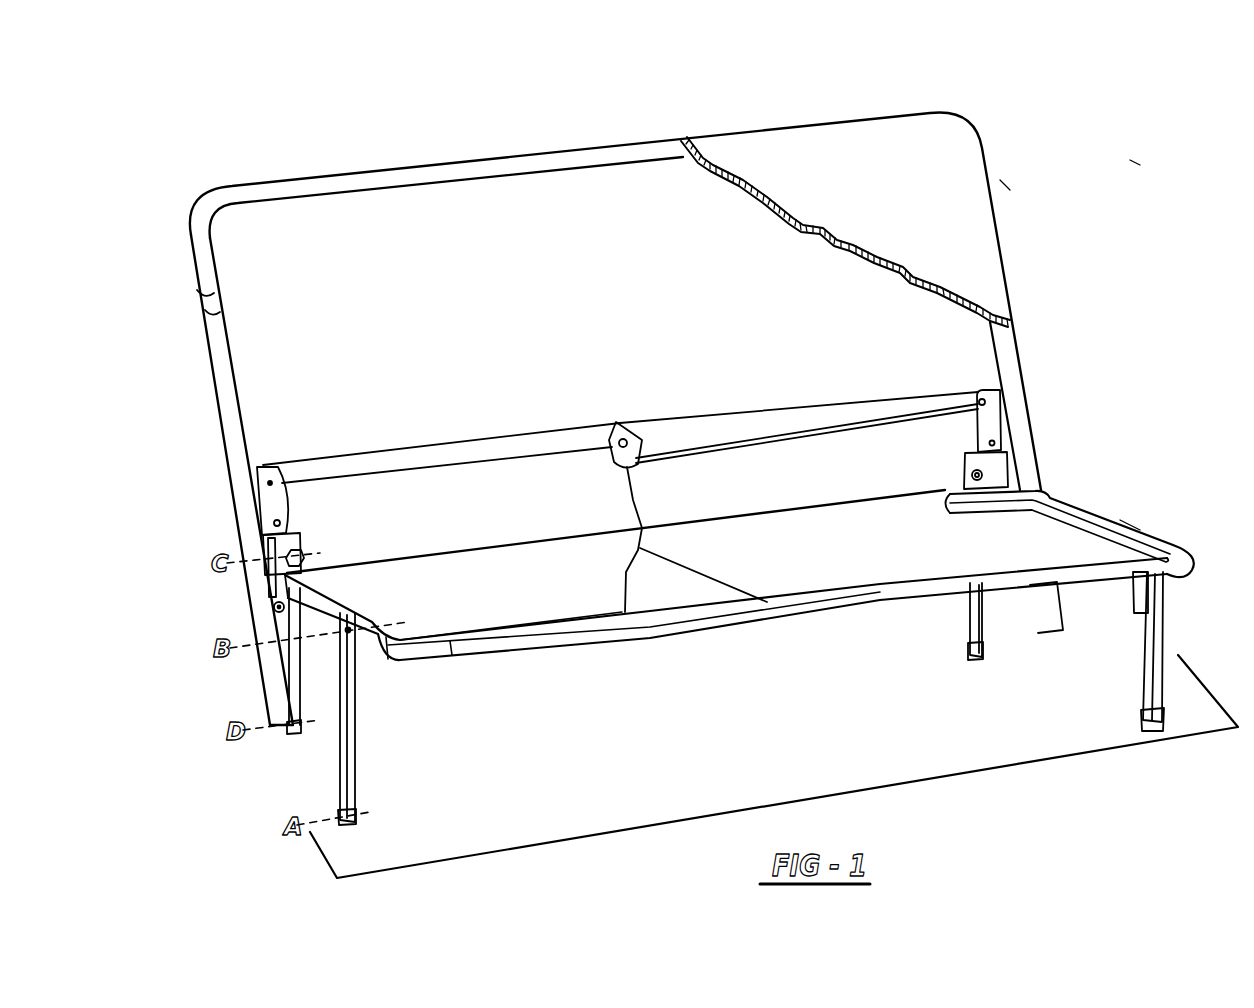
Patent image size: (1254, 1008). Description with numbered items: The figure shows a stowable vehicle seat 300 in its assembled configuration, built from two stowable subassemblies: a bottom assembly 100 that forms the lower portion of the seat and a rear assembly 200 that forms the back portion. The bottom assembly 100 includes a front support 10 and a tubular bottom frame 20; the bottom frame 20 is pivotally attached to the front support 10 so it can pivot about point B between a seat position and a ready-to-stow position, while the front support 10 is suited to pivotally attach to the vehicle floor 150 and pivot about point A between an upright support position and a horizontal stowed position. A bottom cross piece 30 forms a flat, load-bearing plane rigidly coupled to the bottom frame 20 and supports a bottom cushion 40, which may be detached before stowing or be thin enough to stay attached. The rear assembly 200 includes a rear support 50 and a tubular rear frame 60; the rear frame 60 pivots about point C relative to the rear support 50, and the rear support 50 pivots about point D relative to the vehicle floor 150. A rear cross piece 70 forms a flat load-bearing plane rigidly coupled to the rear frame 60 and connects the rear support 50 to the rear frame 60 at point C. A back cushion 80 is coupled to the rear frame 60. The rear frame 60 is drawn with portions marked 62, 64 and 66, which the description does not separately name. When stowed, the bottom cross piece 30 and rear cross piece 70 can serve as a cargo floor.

The front support 10 is at (356, 752).
The bottom frame 20 is at (768, 613).
The bottom cross piece 30 is at (1007, 542).
The bottom cushion 40 is at (513, 597).
The rear support 50 is at (298, 655).
The rear frame 60 is at (432, 163).
The upper tube segment 62 is at (198, 288).
The side tube segment 64 is at (215, 373).
The hinge bracket 66 is at (238, 482).
The rear cross piece 70 is at (966, 392).
The back cushion 80 is at (960, 254).
The bottom assembly 100 is at (1128, 506).
The vehicle floor 150 is at (817, 742).
The rear assembly 200 is at (1003, 179).
The stowable vehicle seat 300 is at (1137, 156).